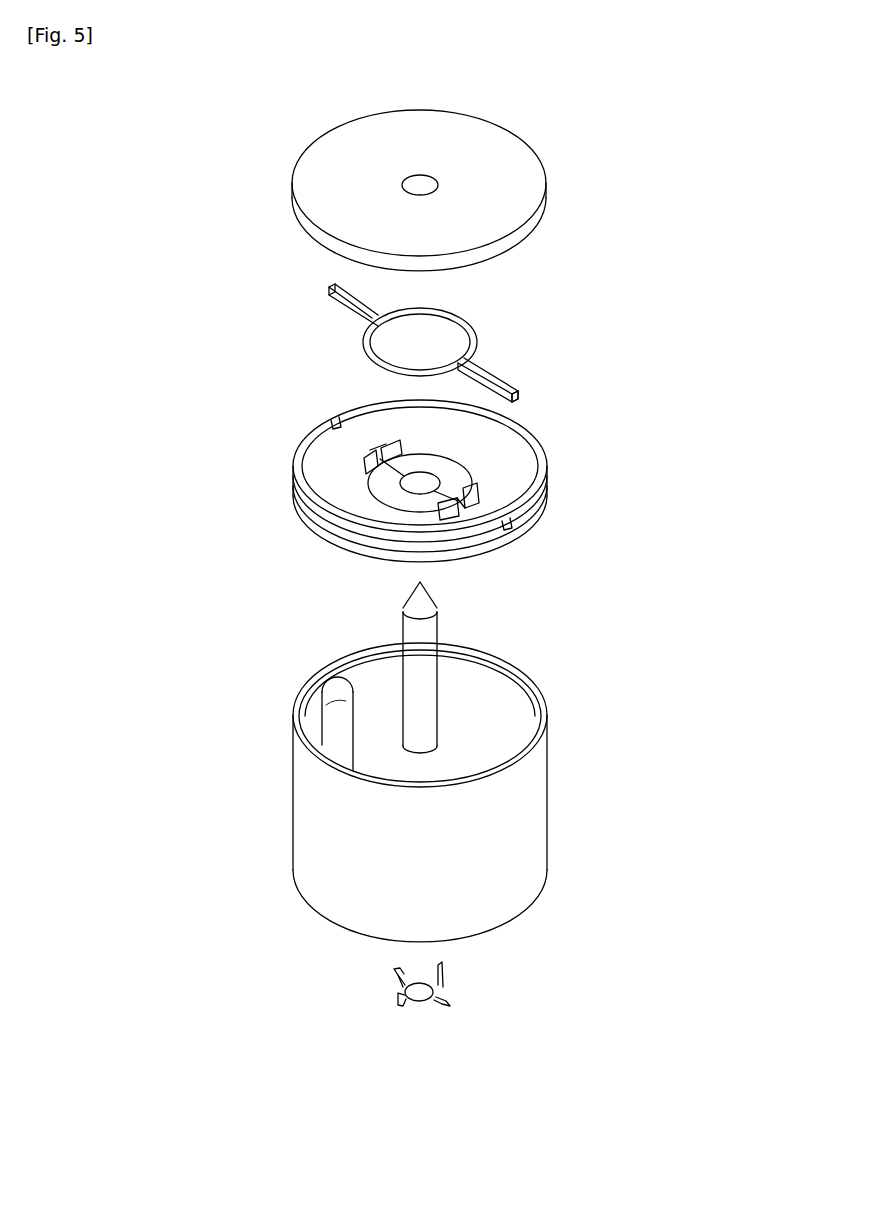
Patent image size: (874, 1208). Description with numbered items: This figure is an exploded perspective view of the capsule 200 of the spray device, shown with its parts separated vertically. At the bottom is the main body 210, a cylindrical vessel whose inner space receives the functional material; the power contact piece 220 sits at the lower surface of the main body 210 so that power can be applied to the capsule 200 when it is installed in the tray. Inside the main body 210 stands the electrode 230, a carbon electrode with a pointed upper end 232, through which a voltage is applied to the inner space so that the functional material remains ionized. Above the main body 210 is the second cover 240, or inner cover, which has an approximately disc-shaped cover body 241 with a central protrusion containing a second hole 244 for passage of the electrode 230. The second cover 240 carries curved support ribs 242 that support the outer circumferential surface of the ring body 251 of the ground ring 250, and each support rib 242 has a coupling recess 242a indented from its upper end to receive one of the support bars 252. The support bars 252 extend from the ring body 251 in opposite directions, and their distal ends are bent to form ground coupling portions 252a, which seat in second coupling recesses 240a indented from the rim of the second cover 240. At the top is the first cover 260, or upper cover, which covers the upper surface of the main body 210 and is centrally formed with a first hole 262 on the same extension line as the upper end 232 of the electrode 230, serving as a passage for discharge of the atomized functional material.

The capsule 200 is at (650, 341).
The main body 210 is at (533, 813).
The power contact piece 220 is at (438, 991).
The electrode 230 is at (465, 676).
The pointed upper end 232 is at (425, 602).
The second cover 240 is at (420, 458).
The second coupling recesses 240a is at (336, 418).
The cover body 241 is at (357, 503).
The support ribs 242 is at (360, 465).
The coupling recess 242a is at (368, 444).
The second hole 244 is at (440, 478).
The ground ring 250 is at (470, 340).
The ring body 251 is at (478, 330).
The support bars 252 is at (497, 380).
The ground coupling portions 252a is at (519, 401).
The first cover 260 is at (533, 172).
The first hole 262 is at (412, 182).